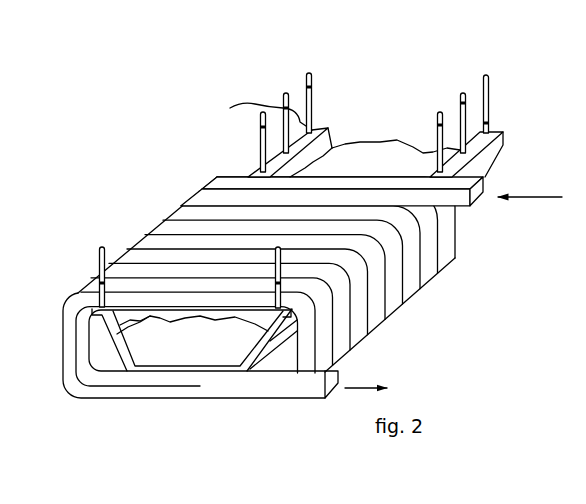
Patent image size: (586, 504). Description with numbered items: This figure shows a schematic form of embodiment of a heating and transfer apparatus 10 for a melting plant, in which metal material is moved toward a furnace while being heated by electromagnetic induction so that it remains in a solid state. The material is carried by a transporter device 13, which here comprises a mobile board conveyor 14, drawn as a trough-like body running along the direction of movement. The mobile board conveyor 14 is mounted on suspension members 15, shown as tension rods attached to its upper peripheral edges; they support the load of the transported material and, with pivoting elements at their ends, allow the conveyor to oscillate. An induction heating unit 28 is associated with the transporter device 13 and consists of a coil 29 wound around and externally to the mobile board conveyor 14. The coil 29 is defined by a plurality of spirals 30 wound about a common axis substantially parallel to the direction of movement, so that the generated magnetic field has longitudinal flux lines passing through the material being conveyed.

The heating and transfer apparatus 10 is at (288, 274).
The transporter device 13 is at (493, 163).
The mobile board conveyor 14 is at (186, 368).
The suspension members 15 is at (284, 108).
The induction heating unit 28 is at (259, 407).
The coil 29 is at (275, 286).
The spirals 30 is at (428, 250).